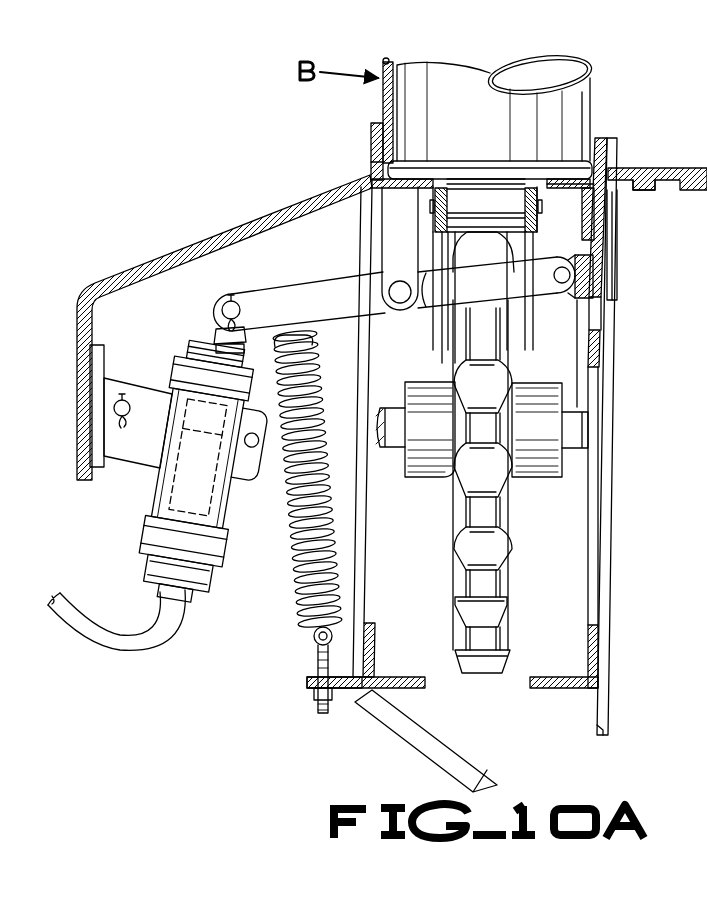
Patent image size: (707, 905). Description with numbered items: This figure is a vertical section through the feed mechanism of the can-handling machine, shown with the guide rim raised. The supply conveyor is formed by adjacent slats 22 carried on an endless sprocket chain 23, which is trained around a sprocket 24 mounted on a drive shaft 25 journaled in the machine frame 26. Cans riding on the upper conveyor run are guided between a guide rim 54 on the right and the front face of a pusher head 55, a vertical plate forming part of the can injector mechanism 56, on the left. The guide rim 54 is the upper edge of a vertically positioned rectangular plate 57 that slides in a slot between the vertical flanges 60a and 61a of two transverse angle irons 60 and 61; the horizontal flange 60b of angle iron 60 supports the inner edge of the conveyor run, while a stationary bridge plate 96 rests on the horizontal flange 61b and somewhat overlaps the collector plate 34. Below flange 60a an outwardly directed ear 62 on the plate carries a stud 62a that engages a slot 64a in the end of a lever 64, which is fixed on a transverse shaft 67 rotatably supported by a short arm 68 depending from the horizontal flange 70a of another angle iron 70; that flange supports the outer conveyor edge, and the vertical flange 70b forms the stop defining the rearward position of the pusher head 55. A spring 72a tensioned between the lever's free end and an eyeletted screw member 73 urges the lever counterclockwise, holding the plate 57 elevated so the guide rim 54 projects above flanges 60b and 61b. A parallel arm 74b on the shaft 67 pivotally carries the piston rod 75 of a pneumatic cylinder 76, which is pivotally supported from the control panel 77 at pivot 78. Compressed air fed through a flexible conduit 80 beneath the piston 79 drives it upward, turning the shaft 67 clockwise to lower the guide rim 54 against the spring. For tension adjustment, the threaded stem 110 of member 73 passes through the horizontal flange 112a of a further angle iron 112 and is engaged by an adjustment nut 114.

The slats 22 is at (456, 139).
The sprocket chain 23 is at (440, 231).
The sprocket 24 is at (492, 555).
The drive shaft 25 is at (568, 426).
The machine frame 26 is at (596, 487).
The collector plate 34 is at (690, 254).
The guide rim 54 is at (604, 139).
The pusher head 55 is at (382, 92).
The can injector mechanism 56 is at (382, 58).
The rectangular plate 57 is at (600, 268).
The angle iron 60 is at (572, 193).
The vertical flange 60a is at (591, 220).
The horizontal flange 60b is at (549, 182).
The angle iron 61 is at (618, 206).
The vertical flange 61a is at (618, 222).
The horizontal flange 61b is at (630, 186).
The ear 62 is at (587, 298).
The stud 62a is at (572, 278).
The lever 64 is at (440, 309).
The slot 64a is at (480, 269).
The transverse shaft 67 is at (393, 287).
The short arm 68 is at (393, 257).
The angle iron 70 is at (372, 146).
The horizontal flange 70a is at (434, 207).
The vertical flange 70b is at (300, 163).
The spring 72a is at (245, 603).
The eyeletted screw member 73 is at (313, 658).
The parallel arm 74b is at (305, 298).
The piston rod 75 is at (190, 463).
The pneumatic cylinder 76 is at (274, 514).
The control panel 77 is at (135, 280).
The pivotal support 78 is at (125, 404).
The piston 79 is at (167, 510).
The flexible conduit 80 is at (90, 618).
The bridge plate 96 is at (654, 177).
The stem 110 is at (314, 641).
The angle iron 112 is at (375, 722).
The horizontal flange 112a is at (310, 683).
The adjustment nut 114 is at (313, 694).